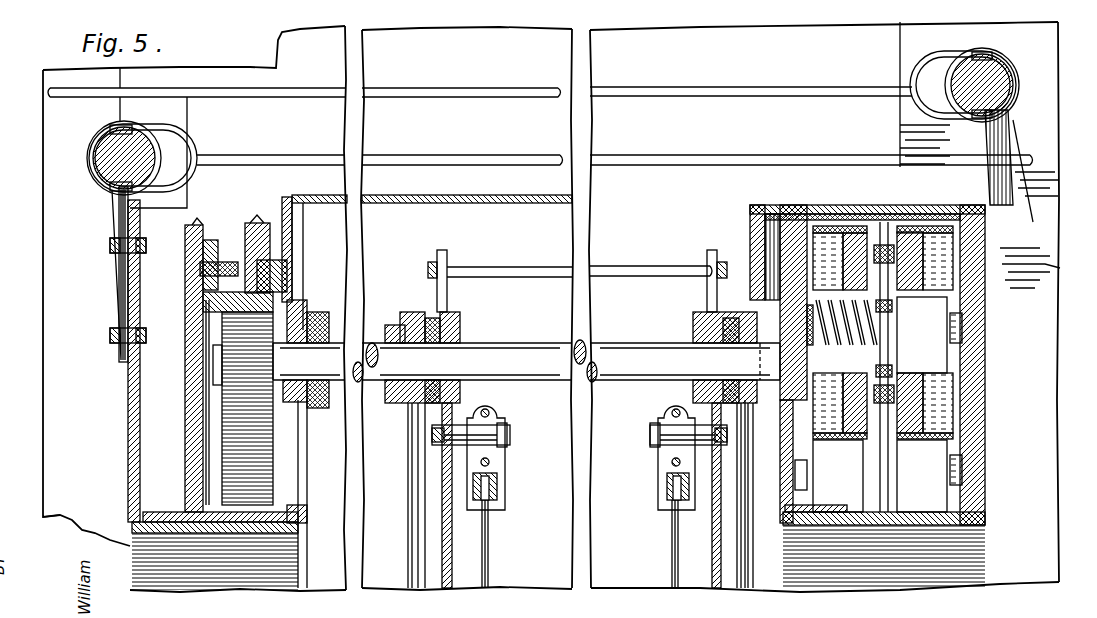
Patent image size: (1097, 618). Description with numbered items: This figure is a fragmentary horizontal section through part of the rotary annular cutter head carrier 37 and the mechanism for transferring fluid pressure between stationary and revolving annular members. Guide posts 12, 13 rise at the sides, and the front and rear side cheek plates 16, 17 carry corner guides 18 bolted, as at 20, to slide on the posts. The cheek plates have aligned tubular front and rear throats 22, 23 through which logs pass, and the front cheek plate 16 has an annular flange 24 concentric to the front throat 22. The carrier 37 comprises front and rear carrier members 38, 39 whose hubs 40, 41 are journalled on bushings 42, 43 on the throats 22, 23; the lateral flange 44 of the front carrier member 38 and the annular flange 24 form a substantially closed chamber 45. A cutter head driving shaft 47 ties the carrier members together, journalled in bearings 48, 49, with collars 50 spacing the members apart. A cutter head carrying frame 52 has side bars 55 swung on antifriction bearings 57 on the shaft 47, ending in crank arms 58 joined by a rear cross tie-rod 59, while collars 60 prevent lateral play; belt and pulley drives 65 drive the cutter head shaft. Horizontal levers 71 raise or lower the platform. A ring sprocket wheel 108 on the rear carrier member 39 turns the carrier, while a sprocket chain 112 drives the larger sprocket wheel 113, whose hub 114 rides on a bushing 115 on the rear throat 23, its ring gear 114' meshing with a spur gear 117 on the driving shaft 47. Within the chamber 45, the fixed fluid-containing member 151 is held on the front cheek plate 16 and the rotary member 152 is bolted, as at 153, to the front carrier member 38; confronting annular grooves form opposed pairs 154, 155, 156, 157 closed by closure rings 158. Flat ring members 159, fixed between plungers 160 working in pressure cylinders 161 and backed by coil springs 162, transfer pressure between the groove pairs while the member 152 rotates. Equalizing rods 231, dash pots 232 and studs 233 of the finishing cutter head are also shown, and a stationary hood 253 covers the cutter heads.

The guide post 12 is at (1005, 82).
The guide post 13 is at (108, 165).
The front side cheek plate 16 is at (985, 392).
The rear side cheek plate 17 is at (128, 395).
The upper corner guide 18 is at (108, 212).
The bolts 20 is at (110, 246).
The front throat 22 is at (930, 528).
The rear throat 23 is at (215, 561).
The annular flange 24 is at (952, 206).
The rotary annular cutter head carrier 37 is at (774, 194).
The front carrier member 38 is at (781, 217).
The rear carrier member 39 is at (286, 205).
The hub 40 is at (822, 512).
The hub 41 is at (292, 507).
The bushing 42 is at (790, 514).
The bushing 43 is at (302, 528).
The circumferential lateral flange 44 is at (839, 206).
The annular chamber 45 is at (922, 497).
The cutter head driving shaft 47 is at (628, 348).
The bearing 48 is at (758, 346).
The bearing 49 is at (315, 398).
The collar 50 is at (325, 335).
The cutter head carrying frame 52 is at (432, 509).
The side bar 55 is at (450, 548).
The antifriction bearing 57 is at (695, 332).
The rear end crank arm 58 is at (441, 260).
The rear cross tie-rod 59 is at (529, 267).
The collar 60 is at (431, 320).
The belt and pulley drive 65 is at (410, 535).
The horizontal lever 71 is at (651, 155).
The ring sprocket wheel 108 is at (258, 222).
The sprocket chain 112 is at (187, 458).
The sprocket wheel 113 is at (187, 426).
The hub 114 is at (215, 511).
The ring gear 114' is at (277, 408).
The bushing 115 is at (132, 530).
The spur gear 117 is at (233, 360).
The fixed fluid-containing member 151 is at (966, 376).
The rotary fluid-containing member 152 is at (785, 500).
The bolts 153 is at (768, 325).
The groove pair 154 is at (820, 258).
The groove pair 155 is at (1008, 339).
The groove pair 156 is at (805, 402).
The groove pair 157 is at (795, 472).
The closure ring 158 is at (815, 312).
The flat ring member 159 is at (868, 210).
The plunger 160 is at (930, 450).
The pressure cylinder 161 is at (817, 208).
The coil spring 162 is at (890, 328).
The equalizing rod 231 is at (495, 528).
The dash pot 232 is at (500, 485).
The stud 233 is at (508, 438).
The hood 253 is at (486, 196).